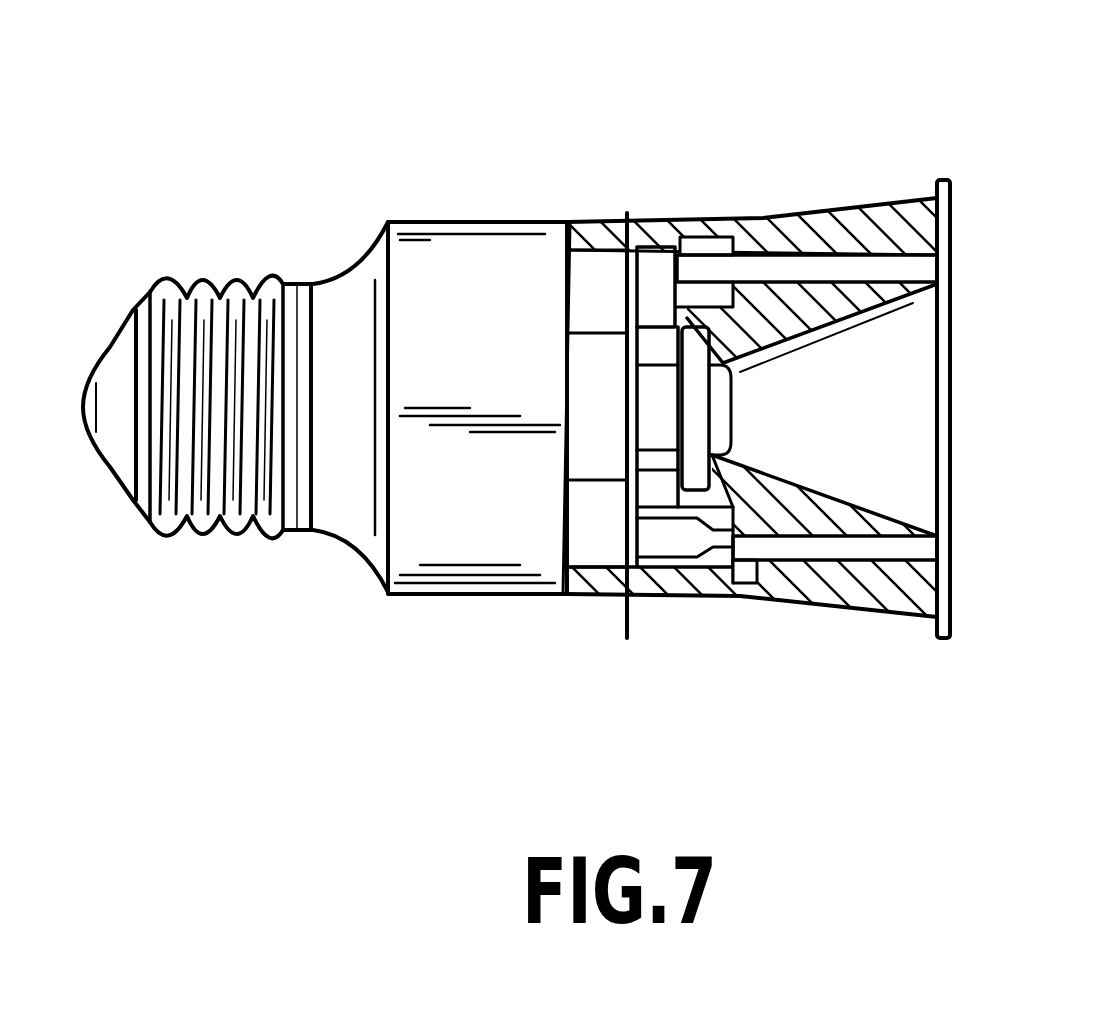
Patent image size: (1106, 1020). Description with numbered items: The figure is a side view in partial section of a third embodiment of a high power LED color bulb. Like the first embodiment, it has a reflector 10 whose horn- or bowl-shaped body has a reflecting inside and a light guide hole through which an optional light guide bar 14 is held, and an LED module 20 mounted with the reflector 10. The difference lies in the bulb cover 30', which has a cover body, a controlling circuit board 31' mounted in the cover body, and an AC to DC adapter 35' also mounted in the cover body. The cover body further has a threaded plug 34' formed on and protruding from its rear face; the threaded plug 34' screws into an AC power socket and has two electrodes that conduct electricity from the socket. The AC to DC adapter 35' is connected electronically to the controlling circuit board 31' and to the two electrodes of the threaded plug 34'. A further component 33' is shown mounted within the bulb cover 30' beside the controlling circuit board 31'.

The reflector 10 is at (904, 188).
The light guide bar 14 is at (910, 268).
The LED module 20 is at (717, 480).
The bulb cover 30' is at (470, 313).
The controlling circuit board 31' is at (582, 339).
The circuit block 33' is at (717, 311).
The threaded plug 34' is at (235, 434).
The AC to DC adapter 35' is at (567, 537).